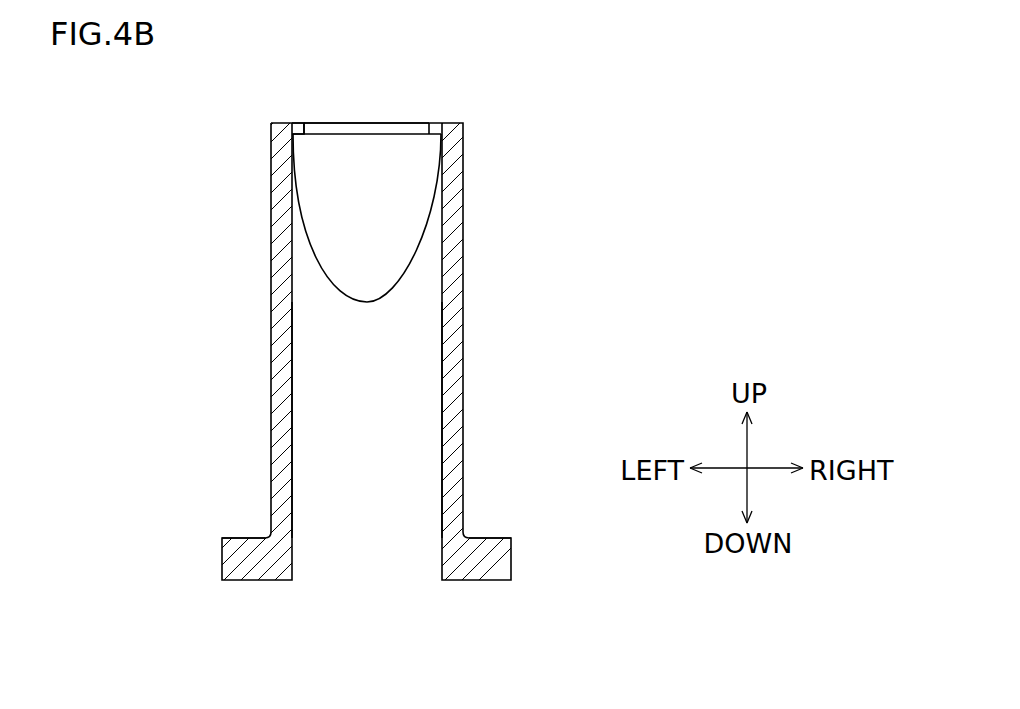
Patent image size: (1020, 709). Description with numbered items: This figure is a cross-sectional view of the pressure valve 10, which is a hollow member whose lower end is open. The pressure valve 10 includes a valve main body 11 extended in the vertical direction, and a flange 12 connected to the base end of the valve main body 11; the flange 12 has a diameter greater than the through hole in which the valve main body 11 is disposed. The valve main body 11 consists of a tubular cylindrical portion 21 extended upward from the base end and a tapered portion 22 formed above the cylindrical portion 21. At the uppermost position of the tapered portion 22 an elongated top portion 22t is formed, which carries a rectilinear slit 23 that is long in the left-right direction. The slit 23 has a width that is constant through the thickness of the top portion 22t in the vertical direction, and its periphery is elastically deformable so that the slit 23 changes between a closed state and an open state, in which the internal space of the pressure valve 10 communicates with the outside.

The pressure valve 10 is at (468, 323).
The valve main body 11 is at (463, 327).
The flange 12 is at (511, 558).
The cylindrical portion 21 is at (190, 302).
The tapered portion 22 is at (287, 173).
The top portion 22t is at (300, 130).
The slit 23 is at (368, 130).